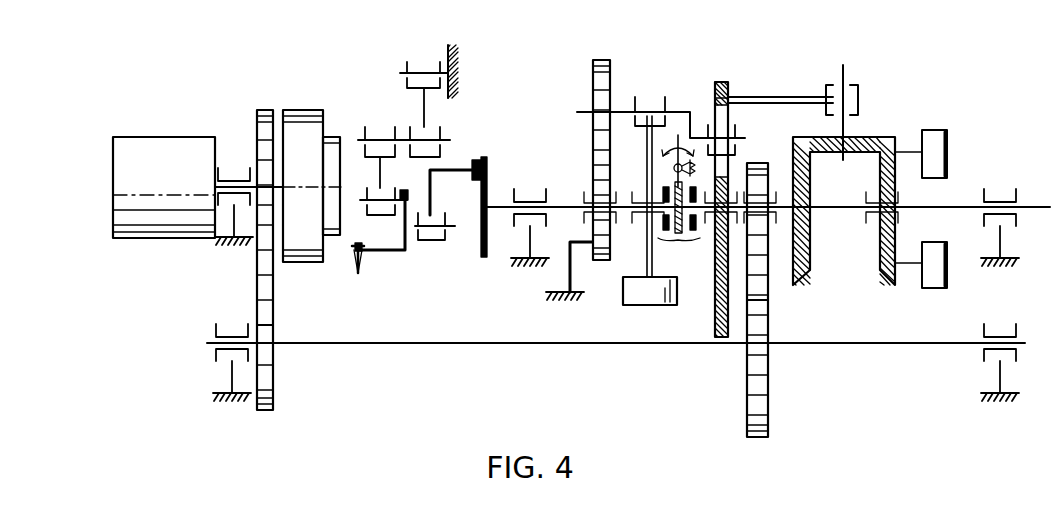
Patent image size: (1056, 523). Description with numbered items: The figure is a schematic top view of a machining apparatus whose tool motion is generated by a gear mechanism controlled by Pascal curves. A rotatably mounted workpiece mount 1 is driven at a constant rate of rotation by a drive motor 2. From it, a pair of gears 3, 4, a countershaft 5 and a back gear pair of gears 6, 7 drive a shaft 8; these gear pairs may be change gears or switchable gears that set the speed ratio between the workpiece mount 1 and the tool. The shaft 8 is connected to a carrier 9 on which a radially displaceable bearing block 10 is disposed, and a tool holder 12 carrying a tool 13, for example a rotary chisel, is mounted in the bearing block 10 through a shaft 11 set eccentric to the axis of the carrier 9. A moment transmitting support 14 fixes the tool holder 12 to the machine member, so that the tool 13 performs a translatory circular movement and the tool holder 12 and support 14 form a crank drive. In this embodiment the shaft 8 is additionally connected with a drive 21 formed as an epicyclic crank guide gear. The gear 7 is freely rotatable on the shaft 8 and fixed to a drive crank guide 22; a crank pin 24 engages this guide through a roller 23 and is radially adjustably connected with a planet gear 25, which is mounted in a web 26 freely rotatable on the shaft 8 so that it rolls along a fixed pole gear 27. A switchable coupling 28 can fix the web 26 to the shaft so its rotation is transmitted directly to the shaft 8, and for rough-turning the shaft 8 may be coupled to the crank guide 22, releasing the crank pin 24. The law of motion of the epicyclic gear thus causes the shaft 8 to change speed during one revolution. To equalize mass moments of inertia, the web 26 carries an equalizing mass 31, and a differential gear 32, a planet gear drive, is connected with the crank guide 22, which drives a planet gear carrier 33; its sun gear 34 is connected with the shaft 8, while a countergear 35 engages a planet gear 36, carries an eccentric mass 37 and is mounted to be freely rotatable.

The workpiece mount 1 is at (313, 110).
The drive motor 2 is at (191, 145).
The gear 3 is at (257, 254).
The gear 4 is at (273, 390).
The countershaft 5 is at (514, 346).
The gear 6 is at (768, 398).
The gear 7 is at (768, 250).
The shaft 8 is at (568, 205).
The carrier 9 is at (488, 175).
The bearing block 10 is at (453, 176).
The shaft 11 is at (446, 240).
The tool holder 12 is at (410, 255).
The tool 13 is at (355, 265).
The moment transmitting support 14 is at (389, 118).
The drive 21 is at (652, 67).
The drive crank guide 22 is at (721, 82).
The roller 23 is at (737, 130).
The crank pin 24 is at (695, 130).
The planet gear 25 is at (593, 72).
The web 26 is at (647, 255).
The pole gear 27 is at (592, 230).
The switchable coupling 28 is at (683, 243).
The equalizing mass 31 is at (630, 294).
The differential gear 32 is at (857, 83).
The planet gear carrier 33 is at (768, 97).
The sun gear 34 is at (811, 238).
The countergear 35 is at (880, 270).
The planet gear 36 is at (854, 196).
The eccentric mass 37 is at (948, 140).